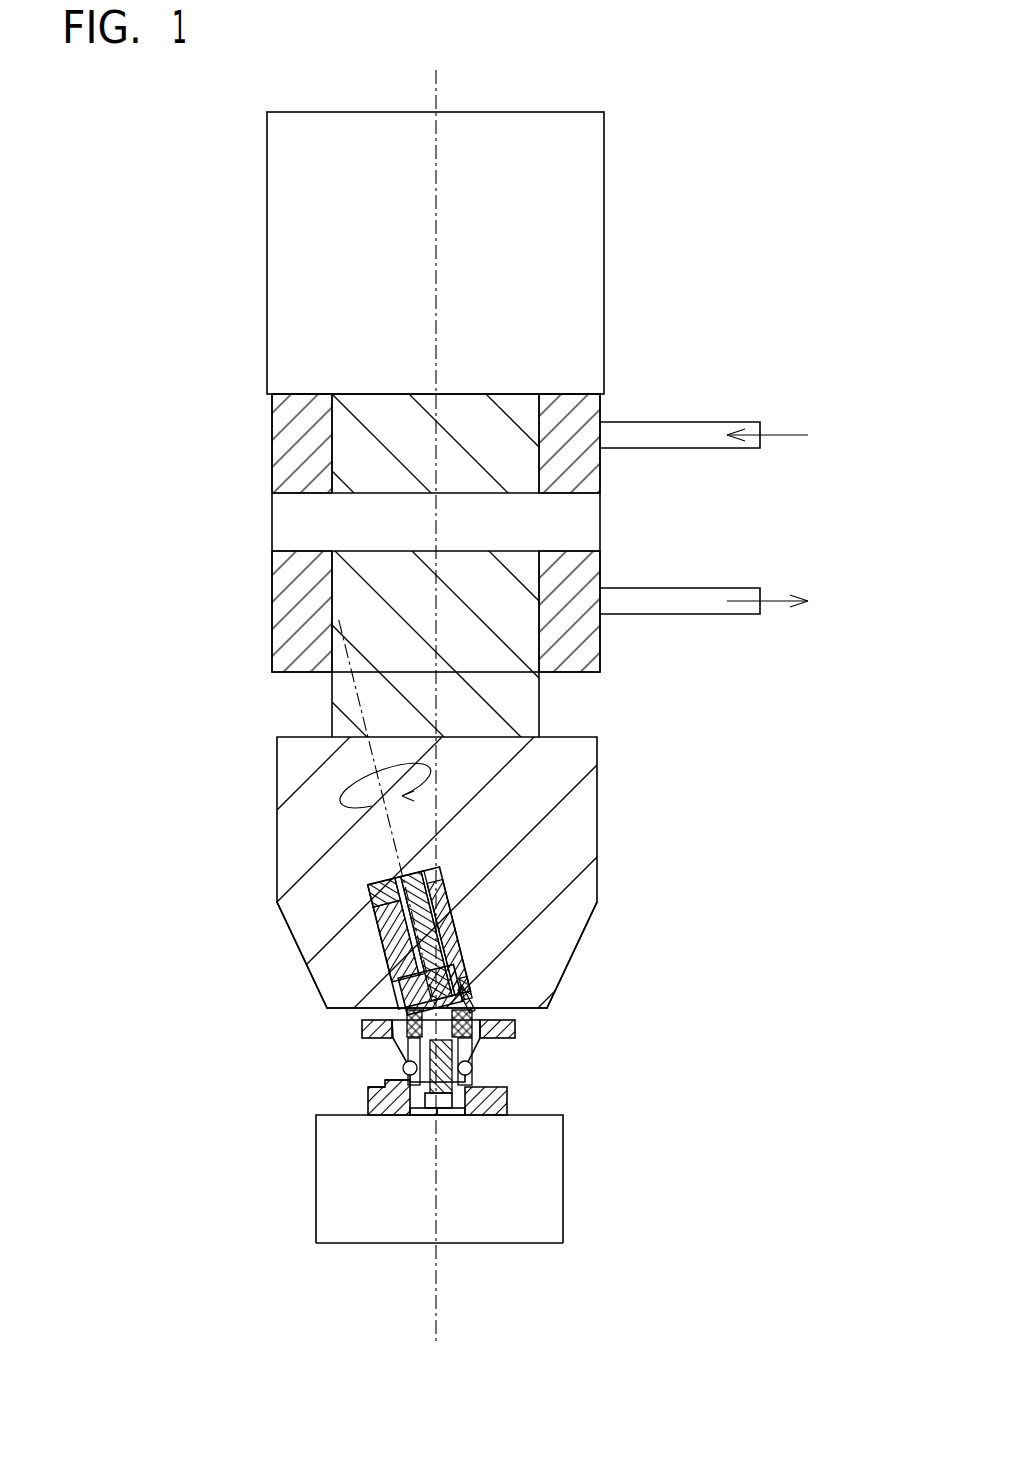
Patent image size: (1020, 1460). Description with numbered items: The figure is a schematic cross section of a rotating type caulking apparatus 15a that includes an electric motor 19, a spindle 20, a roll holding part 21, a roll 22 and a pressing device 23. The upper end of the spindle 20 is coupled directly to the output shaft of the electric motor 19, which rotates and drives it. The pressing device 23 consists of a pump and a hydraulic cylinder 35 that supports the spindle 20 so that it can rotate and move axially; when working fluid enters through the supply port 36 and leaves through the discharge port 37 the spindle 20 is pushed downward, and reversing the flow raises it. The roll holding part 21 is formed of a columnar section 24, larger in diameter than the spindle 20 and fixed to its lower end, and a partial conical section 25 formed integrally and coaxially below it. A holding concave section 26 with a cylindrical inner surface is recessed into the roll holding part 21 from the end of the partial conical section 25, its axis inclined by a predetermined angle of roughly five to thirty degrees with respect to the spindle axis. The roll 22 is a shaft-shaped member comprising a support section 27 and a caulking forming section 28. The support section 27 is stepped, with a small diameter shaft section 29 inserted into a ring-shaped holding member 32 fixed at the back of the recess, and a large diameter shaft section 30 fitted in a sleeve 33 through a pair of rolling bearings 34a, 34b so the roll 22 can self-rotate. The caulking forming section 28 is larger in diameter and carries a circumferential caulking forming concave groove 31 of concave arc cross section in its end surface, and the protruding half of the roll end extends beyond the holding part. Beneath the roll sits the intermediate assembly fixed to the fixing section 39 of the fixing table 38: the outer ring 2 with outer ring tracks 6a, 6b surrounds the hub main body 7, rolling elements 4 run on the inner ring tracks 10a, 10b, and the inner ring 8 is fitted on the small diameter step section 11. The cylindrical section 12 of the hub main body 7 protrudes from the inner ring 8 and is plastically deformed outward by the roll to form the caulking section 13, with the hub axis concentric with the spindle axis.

The rotating type caulking apparatus 15a is at (617, 145).
The electric motor 19 is at (303, 225).
The spindle 20 is at (365, 457).
The pressing device 23 is at (590, 655).
The hydraulic cylinder 35 is at (603, 412).
The supply port 36 is at (688, 433).
The discharge port 37 is at (688, 600).
The columnar section 24 is at (565, 782).
The partial conical section 25 is at (557, 950).
The roll holding part 21 is at (307, 858).
The roll 22 is at (383, 933).
The small diameter shaft section 29 is at (370, 888).
The large diameter shaft section 30 is at (377, 913).
The support section 27 is at (387, 967).
The ring-shaped holding member 32 is at (440, 878).
The holding concave section 26 is at (457, 925).
The rolling bearing 34a is at (450, 895).
The sleeve 33 is at (470, 950).
The rolling bearing 34b is at (462, 975).
The caulking forming section 28 is at (478, 1000).
The small diameter step section 11 is at (383, 1035).
The cylindrical section 12 is at (387, 1050).
The caulking forming concave groove 31 is at (480, 1023).
The caulking section 13 is at (468, 1080).
The inner ring 8 is at (455, 1095).
The rolling elements 4 is at (470, 1085).
The outer ring 2 is at (400, 1088).
The outer ring track 6a is at (408, 1108).
The outer ring track 6b is at (368, 1088).
The inner ring track 10a is at (420, 1112).
The inner ring track 10b is at (445, 1112).
The hub main body 7 is at (430, 1110).
The fixing table 38 is at (328, 1232).
The fixing section 39 is at (377, 1118).